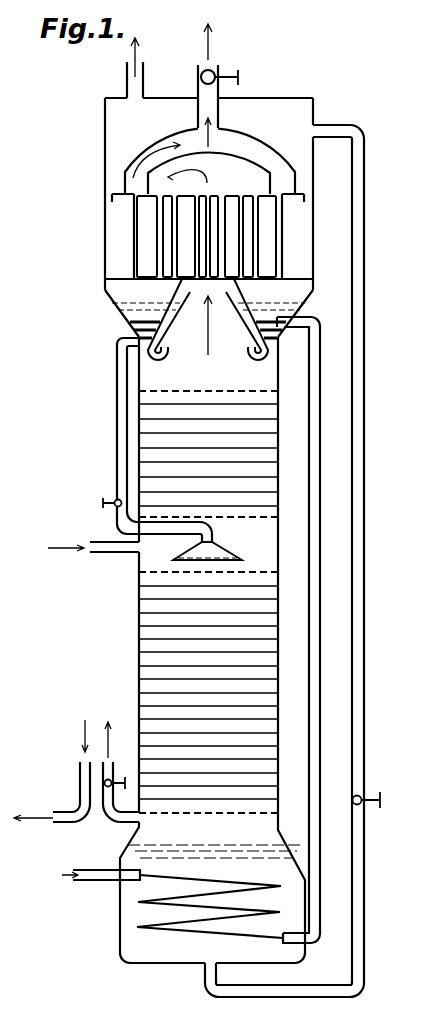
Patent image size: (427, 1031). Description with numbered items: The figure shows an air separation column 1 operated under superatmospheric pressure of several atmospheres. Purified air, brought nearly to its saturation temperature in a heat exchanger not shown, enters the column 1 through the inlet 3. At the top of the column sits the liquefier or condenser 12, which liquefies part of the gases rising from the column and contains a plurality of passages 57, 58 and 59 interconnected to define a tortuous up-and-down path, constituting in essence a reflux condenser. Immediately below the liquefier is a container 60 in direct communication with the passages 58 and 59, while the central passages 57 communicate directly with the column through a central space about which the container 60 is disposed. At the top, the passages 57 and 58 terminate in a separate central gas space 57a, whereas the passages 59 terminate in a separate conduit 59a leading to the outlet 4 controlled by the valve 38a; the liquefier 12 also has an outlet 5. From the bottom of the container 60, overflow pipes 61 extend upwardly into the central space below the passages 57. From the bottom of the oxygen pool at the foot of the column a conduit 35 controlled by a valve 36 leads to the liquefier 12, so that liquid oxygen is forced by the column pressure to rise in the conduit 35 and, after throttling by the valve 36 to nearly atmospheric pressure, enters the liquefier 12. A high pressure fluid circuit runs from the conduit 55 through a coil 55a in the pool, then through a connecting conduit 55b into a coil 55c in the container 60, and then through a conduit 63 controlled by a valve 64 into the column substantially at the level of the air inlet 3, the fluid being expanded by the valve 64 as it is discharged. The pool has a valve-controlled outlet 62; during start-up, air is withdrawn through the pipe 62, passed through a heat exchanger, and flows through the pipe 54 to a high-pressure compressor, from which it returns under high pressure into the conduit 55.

The column 1 is at (155, 633).
The inlet 3 is at (112, 553).
The outlet 4 is at (205, 84).
The outlet 5 is at (133, 66).
The liquefier 12 is at (258, 101).
The conduit 35 is at (360, 429).
The valve 36 is at (381, 800).
The valve 38a is at (215, 72).
The pipe 54 is at (80, 774).
The high pressure conduit 55 is at (100, 872).
The coil 55a is at (211, 883).
The connecting conduit 55b is at (318, 753).
The coil 55c is at (148, 330).
The passages 57 is at (245, 266).
The central gas space 57a is at (208, 180).
The passages 58 is at (168, 249).
The passages 59 is at (137, 213).
The conduit 59a is at (247, 151).
The container 60 is at (125, 291).
The overflow pipes 61 is at (245, 350).
The outlet 62 is at (114, 758).
The conduit 63 is at (118, 364).
The valve 64 is at (102, 497).